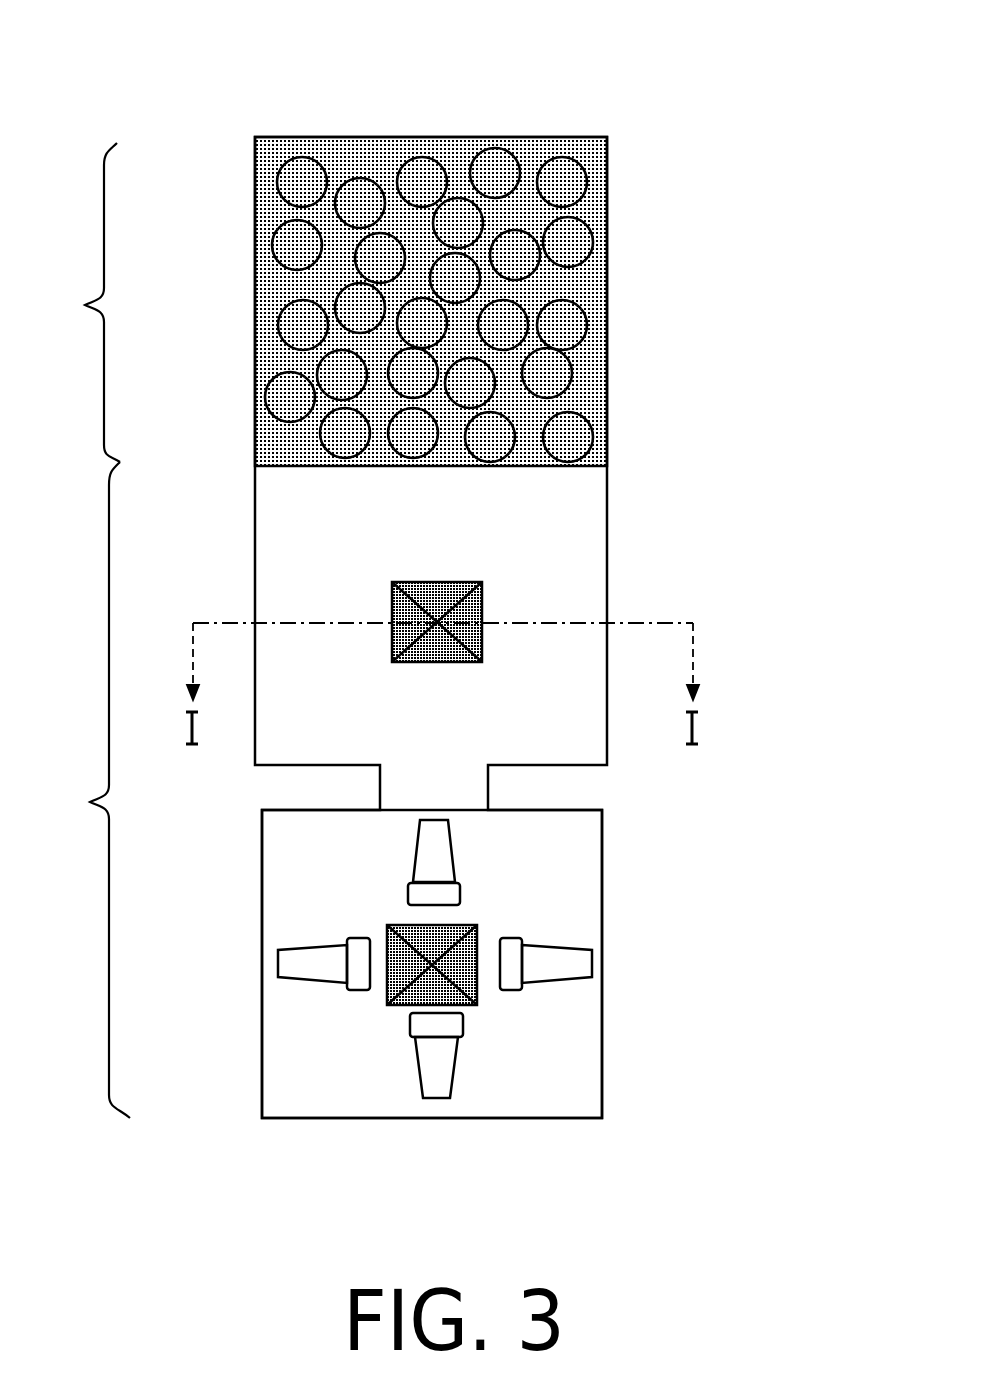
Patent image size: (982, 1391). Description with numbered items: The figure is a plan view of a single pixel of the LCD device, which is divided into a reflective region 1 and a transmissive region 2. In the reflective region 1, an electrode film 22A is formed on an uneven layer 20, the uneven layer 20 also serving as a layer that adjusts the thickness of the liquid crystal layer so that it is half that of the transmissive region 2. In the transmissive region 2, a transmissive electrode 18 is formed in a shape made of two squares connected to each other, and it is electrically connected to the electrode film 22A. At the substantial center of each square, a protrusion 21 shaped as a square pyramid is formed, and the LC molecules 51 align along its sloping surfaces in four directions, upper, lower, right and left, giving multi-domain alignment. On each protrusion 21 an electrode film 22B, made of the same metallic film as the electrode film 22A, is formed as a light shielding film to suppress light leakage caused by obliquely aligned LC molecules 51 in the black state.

The reflective region 1 is at (85, 302).
The transmissive region 2 is at (92, 790).
The transmissive electrode 18 is at (562, 1072).
The uneven layer 20 is at (585, 250).
The protrusion 21 is at (450, 580).
The electrode film 22A is at (347, 153).
The electrode film 22B is at (485, 603).
The LC molecules 51 is at (578, 967).